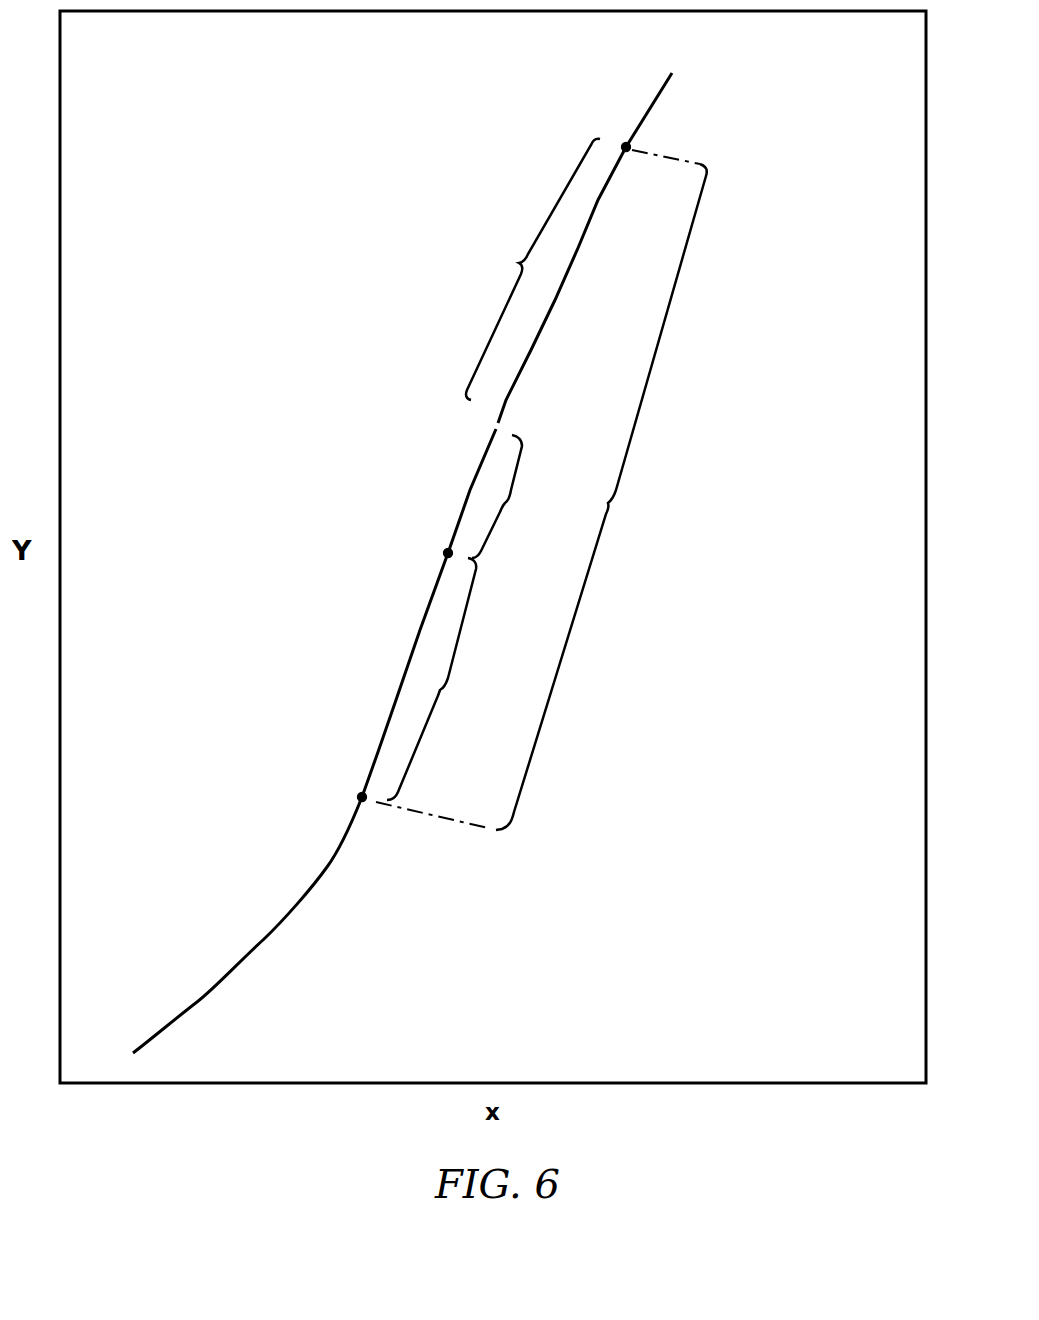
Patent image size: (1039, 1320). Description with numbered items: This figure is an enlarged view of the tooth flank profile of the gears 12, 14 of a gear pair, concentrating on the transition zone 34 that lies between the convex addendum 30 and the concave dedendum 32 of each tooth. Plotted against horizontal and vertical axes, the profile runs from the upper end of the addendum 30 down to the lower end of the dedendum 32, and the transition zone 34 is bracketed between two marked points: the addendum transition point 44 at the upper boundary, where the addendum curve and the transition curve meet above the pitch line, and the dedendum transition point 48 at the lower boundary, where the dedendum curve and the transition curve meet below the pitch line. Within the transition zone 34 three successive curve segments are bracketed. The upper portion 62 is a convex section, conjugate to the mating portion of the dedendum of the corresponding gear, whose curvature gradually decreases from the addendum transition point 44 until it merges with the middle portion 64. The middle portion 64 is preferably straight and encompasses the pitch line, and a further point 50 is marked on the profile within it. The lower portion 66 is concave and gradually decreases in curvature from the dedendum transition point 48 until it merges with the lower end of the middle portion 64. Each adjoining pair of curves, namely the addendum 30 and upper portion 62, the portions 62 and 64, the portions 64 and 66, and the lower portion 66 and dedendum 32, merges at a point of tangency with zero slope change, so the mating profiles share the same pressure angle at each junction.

The first gear 12 is at (425, 553).
The second gear 14 is at (425, 563).
The convex addendum 30 is at (647, 108).
The concave dedendum 32 is at (205, 1000).
The transition zone 34 is at (610, 503).
The addendum transition point 44 is at (626, 147).
The dedendum transition point 48 is at (362, 797).
The intermediate point 50 is at (448, 553).
The upper portion 62 is at (519, 263).
The middle portion 64 is at (505, 503).
The lower portion 66 is at (440, 690).